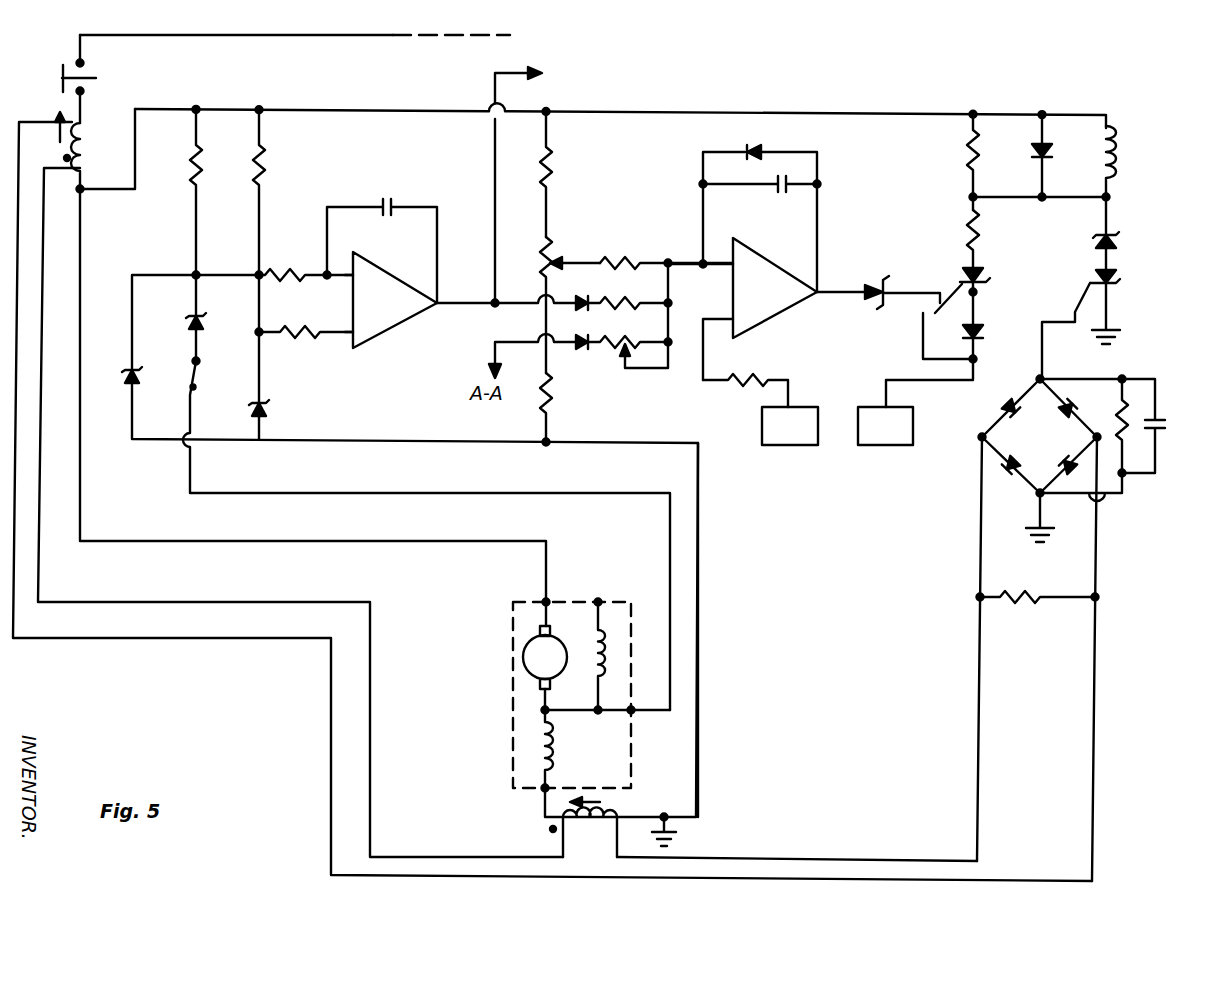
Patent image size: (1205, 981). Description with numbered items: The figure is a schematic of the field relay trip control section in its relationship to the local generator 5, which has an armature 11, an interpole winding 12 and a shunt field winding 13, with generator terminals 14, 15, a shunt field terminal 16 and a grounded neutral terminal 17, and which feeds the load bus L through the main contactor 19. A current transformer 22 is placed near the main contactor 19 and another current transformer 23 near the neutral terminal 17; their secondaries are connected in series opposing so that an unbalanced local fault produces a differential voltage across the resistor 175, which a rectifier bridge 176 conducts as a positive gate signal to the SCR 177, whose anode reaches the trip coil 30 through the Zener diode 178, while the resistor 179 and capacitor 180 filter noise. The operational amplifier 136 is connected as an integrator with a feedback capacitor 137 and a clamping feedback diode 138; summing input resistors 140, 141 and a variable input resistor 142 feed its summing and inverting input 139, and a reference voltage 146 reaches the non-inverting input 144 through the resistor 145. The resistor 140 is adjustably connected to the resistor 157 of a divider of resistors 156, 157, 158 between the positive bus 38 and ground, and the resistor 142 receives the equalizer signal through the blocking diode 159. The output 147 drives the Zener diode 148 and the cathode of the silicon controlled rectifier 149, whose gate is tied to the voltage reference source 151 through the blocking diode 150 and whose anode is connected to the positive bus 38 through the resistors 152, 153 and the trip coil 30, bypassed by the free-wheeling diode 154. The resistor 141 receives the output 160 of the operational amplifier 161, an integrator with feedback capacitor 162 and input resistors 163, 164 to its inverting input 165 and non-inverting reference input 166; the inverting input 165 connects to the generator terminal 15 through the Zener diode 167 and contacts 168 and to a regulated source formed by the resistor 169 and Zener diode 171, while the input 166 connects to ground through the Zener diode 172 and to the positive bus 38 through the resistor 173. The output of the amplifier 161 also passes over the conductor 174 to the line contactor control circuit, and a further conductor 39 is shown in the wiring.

The local generator 5 is at (510, 654).
The armature 11 is at (522, 678).
The interpole winding 12 is at (532, 753).
The shunt field winding 13 is at (610, 649).
The generator terminal 14 is at (546, 602).
The generator terminal 15 is at (631, 710).
The shunt field terminal 16 is at (601, 602).
The neutral terminal 17 is at (538, 796).
The main contactor 19 is at (97, 63).
The current transformer 22 is at (86, 130).
The current transformer 23 is at (588, 827).
The trip coil 30 is at (1118, 148).
The positive bus 38 is at (424, 109).
The conductor 39 is at (700, 625).
The load bus L is at (300, 36).
The operational amplifier 136 is at (790, 317).
The feedback capacitor 137 is at (782, 194).
The feedback diode 138 is at (744, 148).
The summing and inverting input 139 is at (716, 248).
The summing input resistor 140 is at (608, 262).
The summing input resistor 141 is at (622, 293).
The variable input resistor 142 is at (606, 362).
The non-inverting input 144 is at (720, 320).
The resistor 145 is at (743, 384).
The reference voltage 146 is at (788, 448).
The output 147 is at (824, 289).
The Zener diode 148 is at (890, 288).
The silicon controlled rectifier 149 is at (983, 286).
The blocking diode 150 is at (980, 340).
The voltage reference source 151 is at (884, 448).
The resistor 152 is at (964, 148).
The resistor 153 is at (960, 222).
The free-wheeling bypass diode 154 is at (1038, 140).
The resistor 156 is at (552, 165).
The resistor 157 is at (550, 238).
The resistor 158 is at (550, 404).
The blocking diode 159 is at (586, 350).
The output 160 is at (438, 301).
The operational amplifier 161 is at (394, 328).
The feedback capacitor 162 is at (394, 207).
The input resistor 163 is at (288, 270).
The input resistor 164 is at (300, 336).
The inverting input 165 is at (346, 266).
The non-inverting reference input 166 is at (358, 348).
The Zener diode 167 is at (210, 310).
The contacts 168 is at (198, 370).
The resistor 169 is at (188, 178).
The Zener diode 171 is at (132, 363).
The Zener diode 172 is at (268, 408).
The resistor 173 is at (270, 163).
The conductor 174 is at (490, 146).
The resistor 175 is at (1022, 604).
The rectifier bridge 176 is at (1039, 629).
The SCR 177 is at (1120, 288).
The Zener diode 178 is at (1118, 236).
The resistor 179 is at (1117, 398).
The capacitor 180 is at (1164, 437).